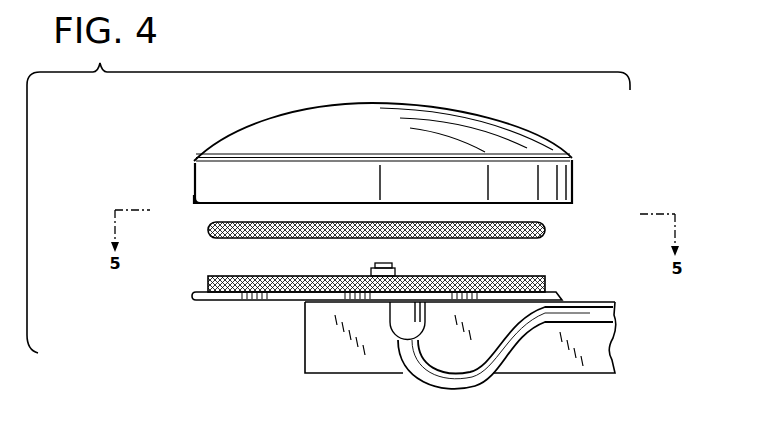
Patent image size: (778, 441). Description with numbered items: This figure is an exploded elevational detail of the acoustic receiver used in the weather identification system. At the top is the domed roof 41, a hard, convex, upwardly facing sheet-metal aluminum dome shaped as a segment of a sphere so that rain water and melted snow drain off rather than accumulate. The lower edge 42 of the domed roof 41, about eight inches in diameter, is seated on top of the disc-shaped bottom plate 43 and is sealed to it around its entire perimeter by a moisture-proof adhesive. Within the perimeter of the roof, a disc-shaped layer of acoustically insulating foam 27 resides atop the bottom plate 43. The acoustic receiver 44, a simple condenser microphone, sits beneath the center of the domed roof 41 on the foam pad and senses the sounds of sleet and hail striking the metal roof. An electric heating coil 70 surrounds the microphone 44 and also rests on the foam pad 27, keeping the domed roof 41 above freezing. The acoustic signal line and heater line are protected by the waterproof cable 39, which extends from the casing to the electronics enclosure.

The domed roof 41 is at (235, 133).
The lower edge 42 is at (192, 205).
The electric heating coil 70 is at (548, 233).
The acoustic receiver 44 is at (396, 272).
The acoustically insulating foam 27 is at (525, 276).
The bottom plate 43 is at (562, 292).
The waterproof cable 39 is at (475, 378).